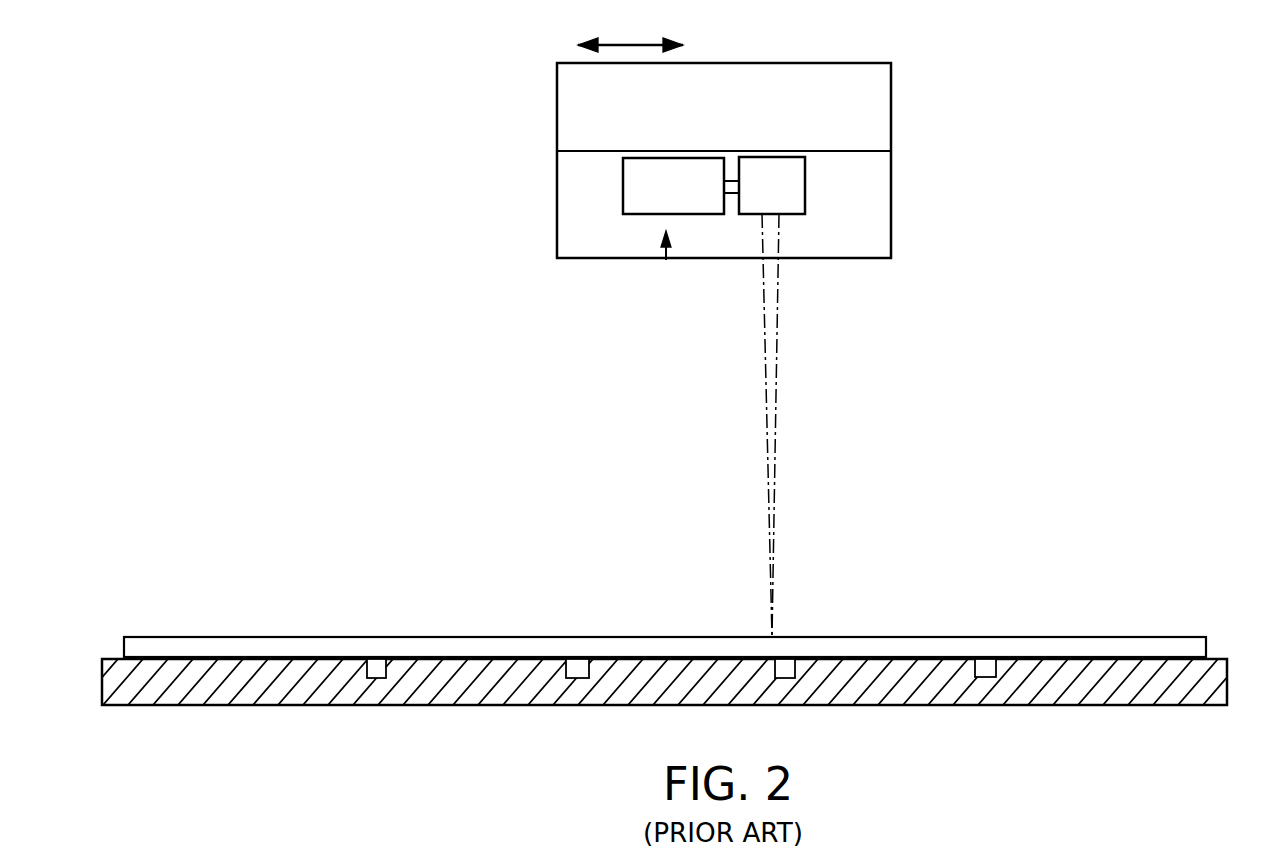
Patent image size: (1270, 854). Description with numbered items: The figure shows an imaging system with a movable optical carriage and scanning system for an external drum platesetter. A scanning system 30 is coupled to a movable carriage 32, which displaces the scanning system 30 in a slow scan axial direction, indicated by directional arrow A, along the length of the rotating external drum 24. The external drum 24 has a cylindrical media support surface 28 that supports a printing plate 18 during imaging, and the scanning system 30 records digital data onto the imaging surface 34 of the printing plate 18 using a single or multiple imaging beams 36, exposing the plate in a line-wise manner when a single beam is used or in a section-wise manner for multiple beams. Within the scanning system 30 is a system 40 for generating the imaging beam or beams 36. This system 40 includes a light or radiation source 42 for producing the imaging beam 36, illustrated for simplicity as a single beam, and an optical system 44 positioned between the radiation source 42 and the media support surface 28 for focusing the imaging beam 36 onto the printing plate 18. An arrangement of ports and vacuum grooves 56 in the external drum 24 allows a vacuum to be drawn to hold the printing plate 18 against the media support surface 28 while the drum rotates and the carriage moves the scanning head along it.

The directional arrow A is at (628, 45).
The printing plate 18 is at (1128, 643).
The external drum 24 is at (1140, 697).
The media support surface 28 is at (1213, 657).
The scanning system 30 is at (725, 166).
The movable carriage 32 is at (858, 70).
The imaging surface 34 is at (1043, 637).
The imaging beam 36 is at (780, 370).
The system for generating the imaging beam 40 is at (666, 260).
The radiation source 42 is at (632, 203).
The optical system 44 is at (792, 185).
The vacuum grooves 56 is at (376, 672).